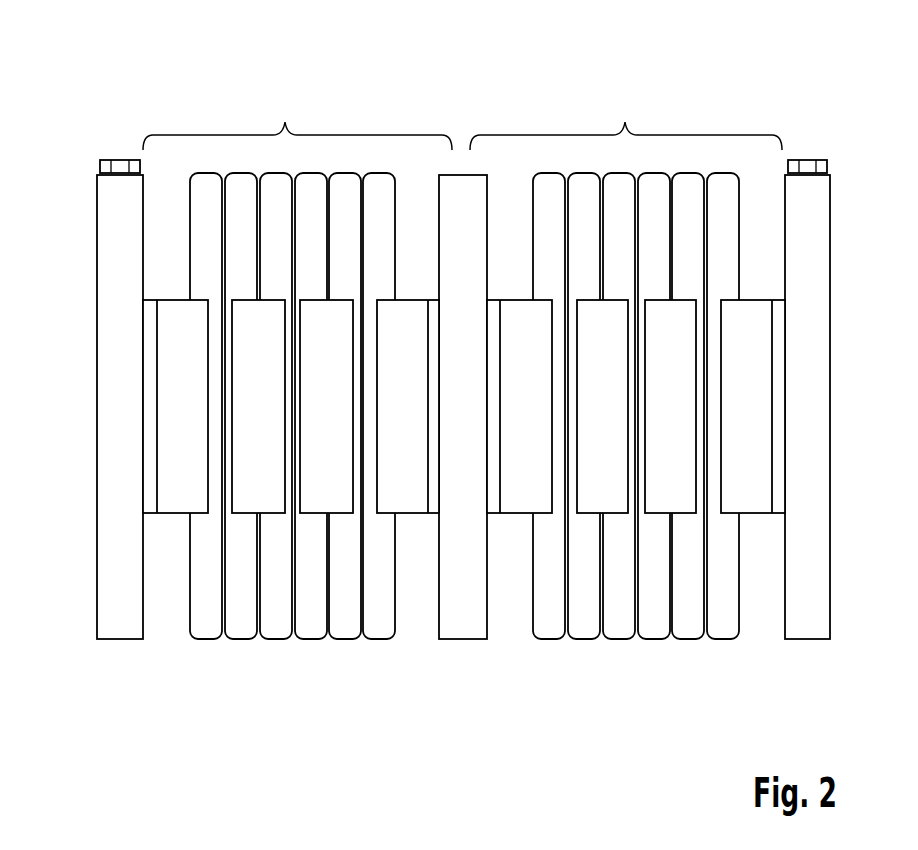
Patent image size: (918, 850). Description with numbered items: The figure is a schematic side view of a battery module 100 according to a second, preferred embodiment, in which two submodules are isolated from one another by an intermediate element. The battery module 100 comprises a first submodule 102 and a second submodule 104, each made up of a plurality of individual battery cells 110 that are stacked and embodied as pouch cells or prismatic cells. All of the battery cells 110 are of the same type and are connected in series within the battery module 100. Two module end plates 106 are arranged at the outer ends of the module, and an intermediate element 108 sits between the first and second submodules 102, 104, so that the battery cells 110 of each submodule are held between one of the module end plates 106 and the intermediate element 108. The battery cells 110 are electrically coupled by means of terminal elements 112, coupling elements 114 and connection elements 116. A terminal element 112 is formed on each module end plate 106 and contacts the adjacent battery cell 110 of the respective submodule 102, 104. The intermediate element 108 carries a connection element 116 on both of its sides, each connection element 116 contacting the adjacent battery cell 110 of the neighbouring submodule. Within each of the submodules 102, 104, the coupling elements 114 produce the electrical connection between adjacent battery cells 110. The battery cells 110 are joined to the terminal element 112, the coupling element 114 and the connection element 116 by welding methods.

The battery module 100 is at (540, 97).
The first submodule 102 is at (285, 122).
The second submodule 104 is at (625, 120).
The module end plate 106 is at (120, 220).
The intermediate element 108 is at (457, 622).
The battery cell 110 is at (240, 622).
The terminal element 112 is at (112, 166).
The coupling element 114 is at (257, 487).
The connection element 116 is at (433, 507).